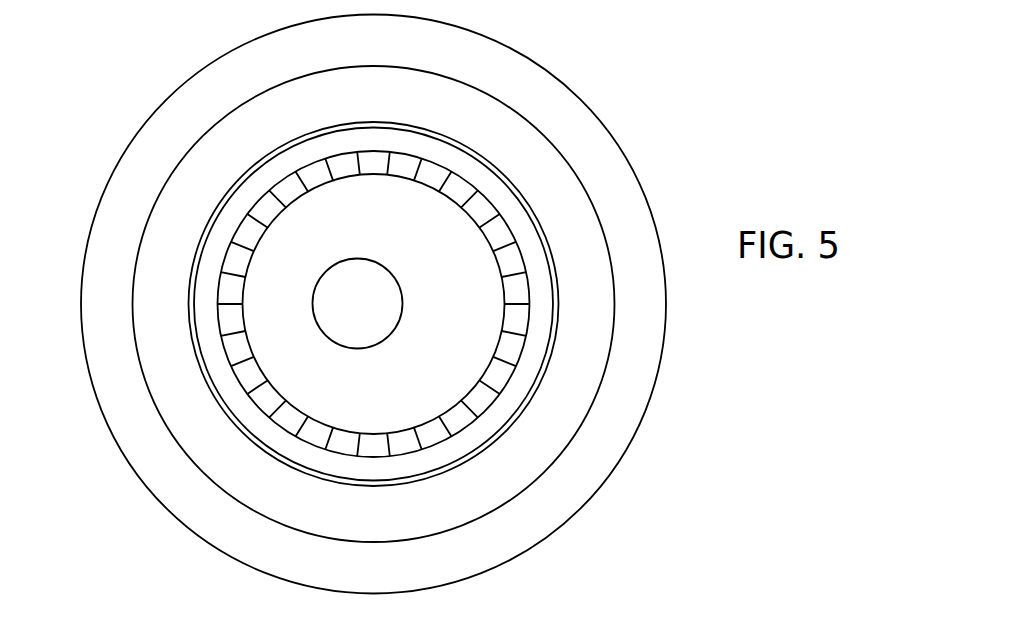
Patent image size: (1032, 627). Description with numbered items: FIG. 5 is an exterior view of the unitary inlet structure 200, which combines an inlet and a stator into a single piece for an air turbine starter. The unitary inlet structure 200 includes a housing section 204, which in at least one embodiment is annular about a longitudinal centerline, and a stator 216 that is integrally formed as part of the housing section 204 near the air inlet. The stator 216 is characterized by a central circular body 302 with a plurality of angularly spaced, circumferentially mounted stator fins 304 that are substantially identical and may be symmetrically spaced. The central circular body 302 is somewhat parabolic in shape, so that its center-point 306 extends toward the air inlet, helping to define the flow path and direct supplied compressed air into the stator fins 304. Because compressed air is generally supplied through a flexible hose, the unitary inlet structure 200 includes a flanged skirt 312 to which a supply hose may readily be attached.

The unitary inlet structure 200 is at (135, 102).
The housing section 204 is at (625, 333).
The stator 216 is at (480, 316).
The central circular body 302 is at (332, 249).
The stator fins 304 is at (413, 427).
The center-point 306 is at (378, 314).
The flanged skirt 312 is at (190, 277).